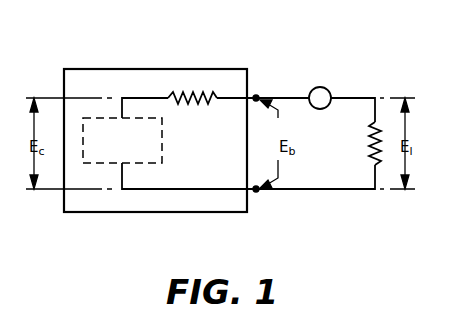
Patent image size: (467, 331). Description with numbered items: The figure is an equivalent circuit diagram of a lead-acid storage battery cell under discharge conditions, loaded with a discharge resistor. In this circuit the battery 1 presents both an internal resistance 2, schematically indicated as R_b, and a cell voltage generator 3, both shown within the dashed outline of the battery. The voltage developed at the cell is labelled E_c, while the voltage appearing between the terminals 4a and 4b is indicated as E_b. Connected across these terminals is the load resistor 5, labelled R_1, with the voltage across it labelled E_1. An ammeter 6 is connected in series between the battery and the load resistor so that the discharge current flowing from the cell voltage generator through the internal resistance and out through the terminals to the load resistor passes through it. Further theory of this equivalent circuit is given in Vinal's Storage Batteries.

The battery 1 is at (114, 69).
The internal resistance 2 is at (207, 95).
The cell voltage generator 3 is at (159, 164).
The terminal 4a is at (257, 96).
The terminal 4b is at (257, 193).
The load resistor 5 is at (372, 131).
The ammeter 6 is at (327, 87).